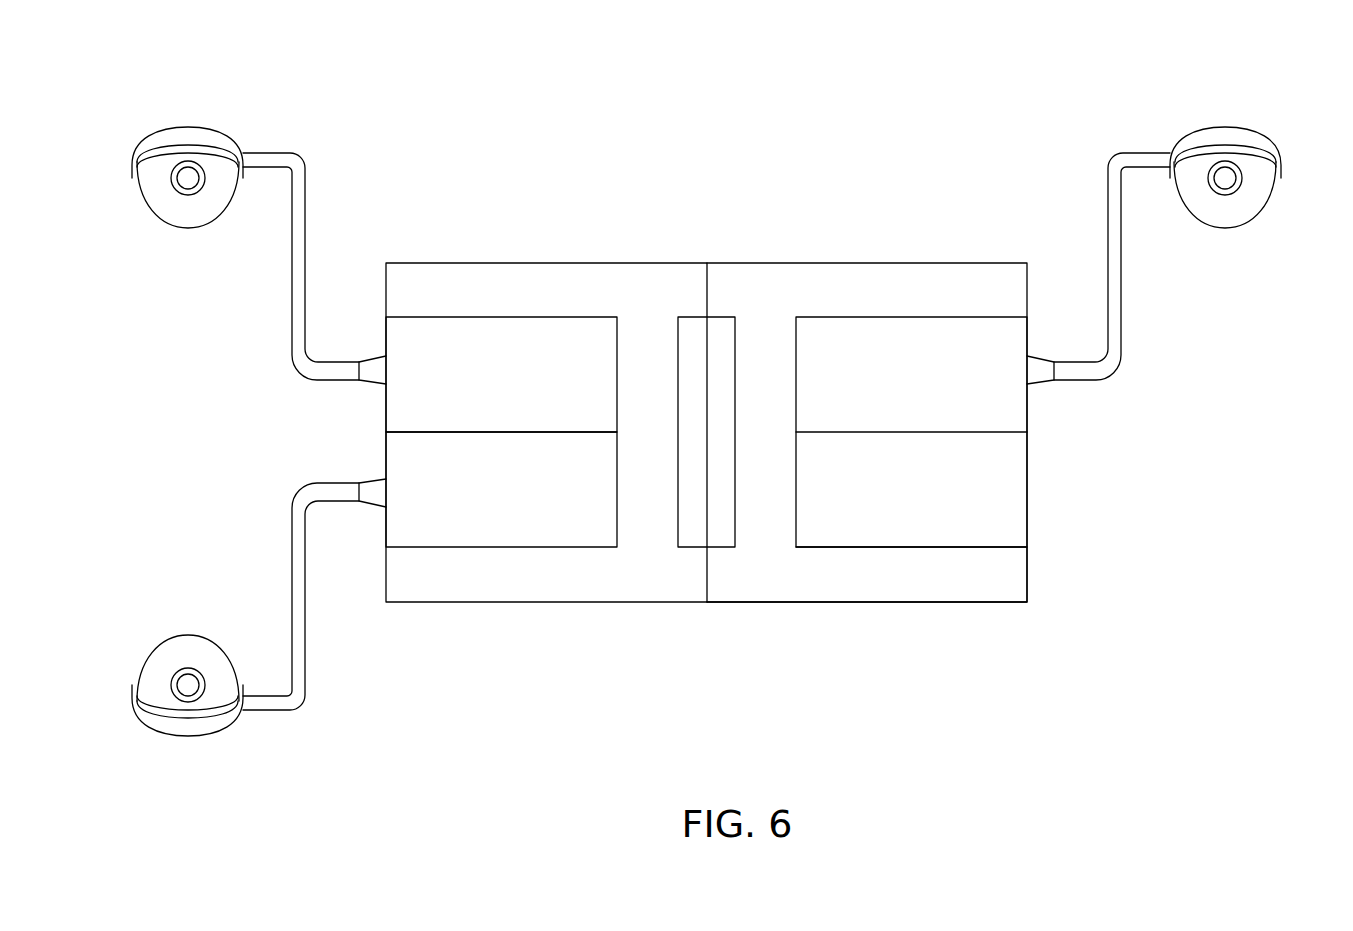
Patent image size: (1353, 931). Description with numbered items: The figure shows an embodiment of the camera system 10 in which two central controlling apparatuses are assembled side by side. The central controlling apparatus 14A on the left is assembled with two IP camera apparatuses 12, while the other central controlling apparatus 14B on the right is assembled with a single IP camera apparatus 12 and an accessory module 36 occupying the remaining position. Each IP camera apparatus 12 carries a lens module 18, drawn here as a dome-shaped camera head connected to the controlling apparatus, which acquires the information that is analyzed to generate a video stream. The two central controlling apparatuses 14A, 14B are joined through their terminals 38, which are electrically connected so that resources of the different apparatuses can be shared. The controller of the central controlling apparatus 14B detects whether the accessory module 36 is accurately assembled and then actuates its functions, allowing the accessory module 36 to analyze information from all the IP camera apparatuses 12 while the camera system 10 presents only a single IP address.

The camera system 10 is at (968, 104).
The IP camera apparatus 12 is at (459, 367).
The central controlling apparatus 14A is at (683, 277).
The central controlling apparatus 14B is at (731, 277).
The lens module 18 is at (137, 134).
The accessory module 36 is at (953, 497).
The terminal 38 is at (690, 537).